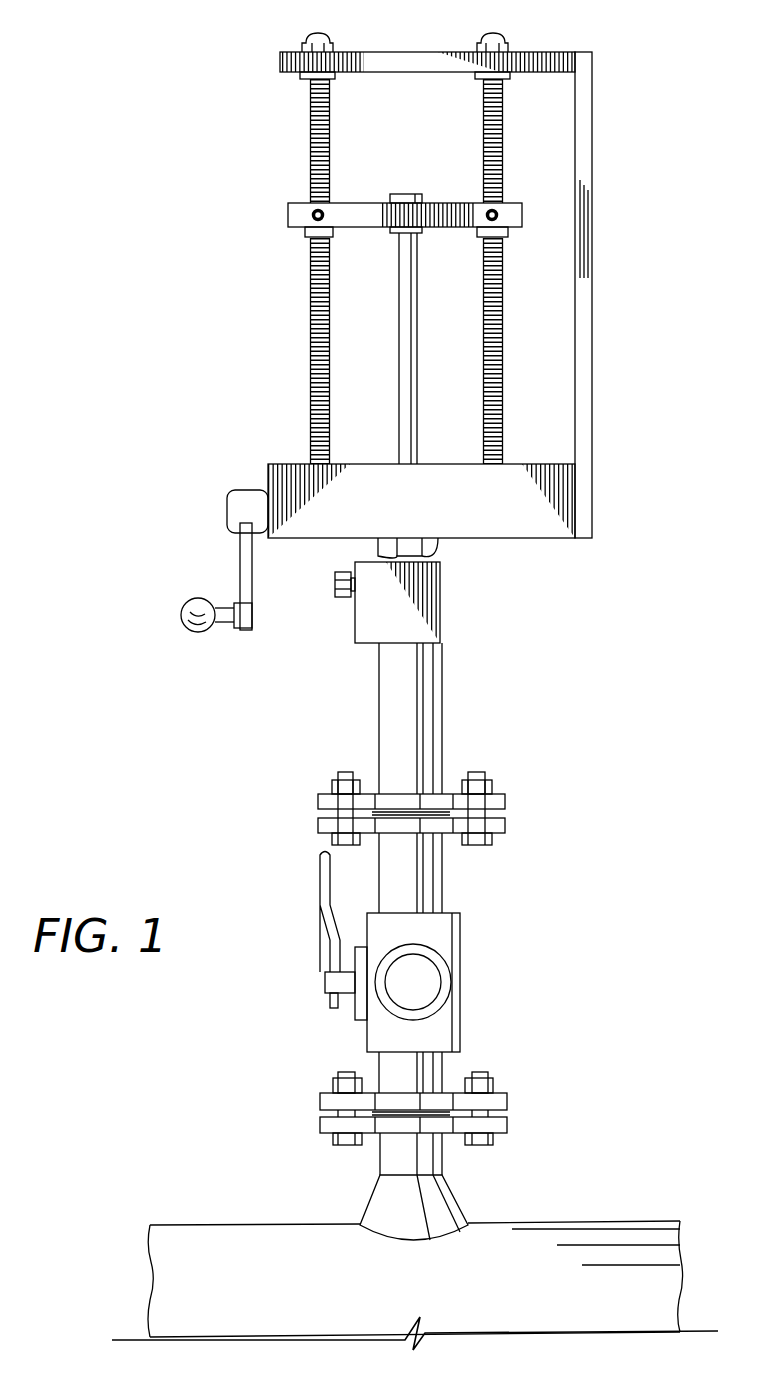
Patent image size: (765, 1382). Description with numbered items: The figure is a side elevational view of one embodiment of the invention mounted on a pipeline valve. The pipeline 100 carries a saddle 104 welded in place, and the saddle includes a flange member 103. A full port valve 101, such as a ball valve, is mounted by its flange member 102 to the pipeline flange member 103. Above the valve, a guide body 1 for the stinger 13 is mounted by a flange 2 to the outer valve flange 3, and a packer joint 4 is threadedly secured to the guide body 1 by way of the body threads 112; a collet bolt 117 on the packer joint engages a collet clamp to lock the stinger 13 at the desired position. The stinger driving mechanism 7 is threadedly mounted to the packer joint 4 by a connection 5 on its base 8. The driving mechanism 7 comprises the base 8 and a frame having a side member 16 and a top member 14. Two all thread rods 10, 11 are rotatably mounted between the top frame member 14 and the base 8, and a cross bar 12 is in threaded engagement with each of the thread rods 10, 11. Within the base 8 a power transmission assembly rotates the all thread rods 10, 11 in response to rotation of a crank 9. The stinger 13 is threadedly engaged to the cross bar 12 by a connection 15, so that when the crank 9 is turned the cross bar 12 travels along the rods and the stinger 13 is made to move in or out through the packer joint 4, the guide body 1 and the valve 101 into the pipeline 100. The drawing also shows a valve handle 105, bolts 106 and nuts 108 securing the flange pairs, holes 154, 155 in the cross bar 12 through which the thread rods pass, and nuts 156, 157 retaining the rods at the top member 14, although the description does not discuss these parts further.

The guide body 1 is at (443, 702).
The flange 2 is at (507, 800).
The outer valve flange 3 is at (507, 826).
The packer joint 4 is at (440, 608).
The connection 5 is at (440, 550).
The stinger driving mechanism 7 is at (660, 320).
The base 8 is at (284, 465).
The crank 9 is at (240, 575).
The all thread rod 10 is at (313, 318).
The all thread rod 11 is at (503, 318).
The cross bar 12 is at (368, 203).
The stinger 13 is at (400, 413).
The top member 14 is at (572, 52).
The connection 15 is at (415, 240).
The side member 16 is at (592, 268).
The pipeline 100 is at (580, 1222).
The full port valve 101 is at (460, 942).
The flange member 102 is at (507, 1096).
The flange member 103 is at (507, 1128).
The saddle 104 is at (462, 1200).
The valve handle 105 is at (326, 985).
The bolt 106 is at (338, 770).
The nut 108 is at (332, 786).
The internal threads 112 is at (440, 648).
The collet bolt 117 is at (336, 596).
The hole 154 is at (490, 215).
The hole 155 is at (316, 215).
The acorn nut 156 is at (310, 32).
The acorn nut 157 is at (490, 32).